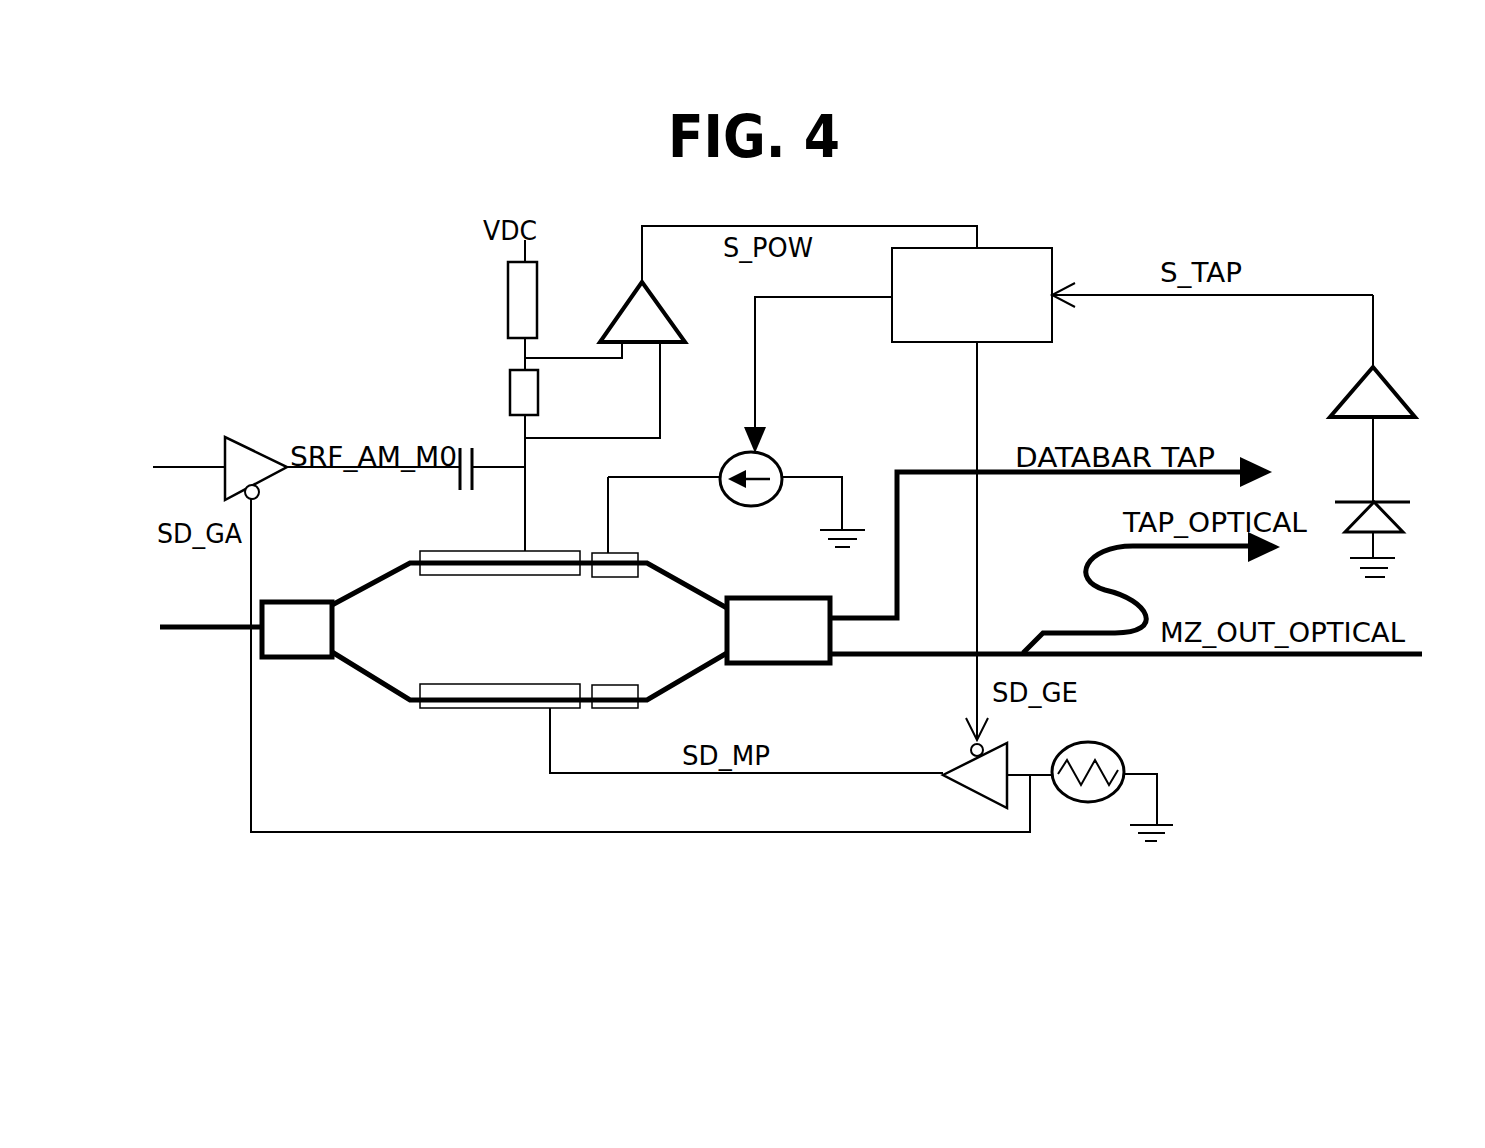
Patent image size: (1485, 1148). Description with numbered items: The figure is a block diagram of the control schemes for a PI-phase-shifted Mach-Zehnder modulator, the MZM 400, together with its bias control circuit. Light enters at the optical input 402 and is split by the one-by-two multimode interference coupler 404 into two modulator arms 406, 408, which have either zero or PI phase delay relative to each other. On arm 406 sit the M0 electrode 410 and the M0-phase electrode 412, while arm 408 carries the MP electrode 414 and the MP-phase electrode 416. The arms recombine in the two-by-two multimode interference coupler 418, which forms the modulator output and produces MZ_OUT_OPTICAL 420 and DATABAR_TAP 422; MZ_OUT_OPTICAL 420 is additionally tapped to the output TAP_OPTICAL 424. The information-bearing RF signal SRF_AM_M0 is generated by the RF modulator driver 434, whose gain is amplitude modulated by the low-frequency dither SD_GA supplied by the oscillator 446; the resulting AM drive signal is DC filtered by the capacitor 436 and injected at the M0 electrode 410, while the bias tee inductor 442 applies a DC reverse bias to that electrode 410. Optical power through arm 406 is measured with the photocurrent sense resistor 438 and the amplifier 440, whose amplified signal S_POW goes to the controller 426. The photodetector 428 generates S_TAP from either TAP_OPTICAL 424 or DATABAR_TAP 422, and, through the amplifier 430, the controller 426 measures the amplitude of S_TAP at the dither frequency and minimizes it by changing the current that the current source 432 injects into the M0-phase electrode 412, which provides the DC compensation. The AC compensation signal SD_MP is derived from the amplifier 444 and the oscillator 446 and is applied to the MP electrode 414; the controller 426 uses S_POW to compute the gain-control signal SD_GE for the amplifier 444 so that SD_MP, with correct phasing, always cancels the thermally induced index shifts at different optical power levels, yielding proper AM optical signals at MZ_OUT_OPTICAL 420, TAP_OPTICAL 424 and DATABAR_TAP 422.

The PI-phase-shifted Mach-Zehnder modulator 400 is at (546, 678).
The optical input 402 is at (178, 620).
The 1×2 multimode interference coupler 404 is at (297, 629).
The modulator arm 406 is at (393, 580).
The modulator arm 408 is at (368, 680).
The M0 electrode 410 is at (515, 568).
The M0-phase electrode 412 is at (618, 577).
The MP electrode 414 is at (512, 687).
The MP-phase electrode 416 is at (613, 687).
The 2×2 multimode interference coupler 418 is at (778, 630).
The MZ_OUT_OPTICAL output 420 is at (1240, 660).
The DATABAR_TAP output 422 is at (1085, 475).
The TAP_OPTICAL output 424 is at (1198, 550).
The controller 426 is at (1038, 252).
The photodetector 428 is at (1416, 519).
The amplifier 430 is at (1352, 398).
The current source 432 is at (763, 453).
The RF modulator driver 434 is at (243, 460).
The capacitor 436 is at (466, 490).
The photocurrent sense resistor 438 is at (517, 382).
The amplifier 440 is at (650, 308).
The bias tee inductor 442 is at (508, 285).
The amplifier 444 is at (975, 778).
The oscillator 446 is at (1103, 742).